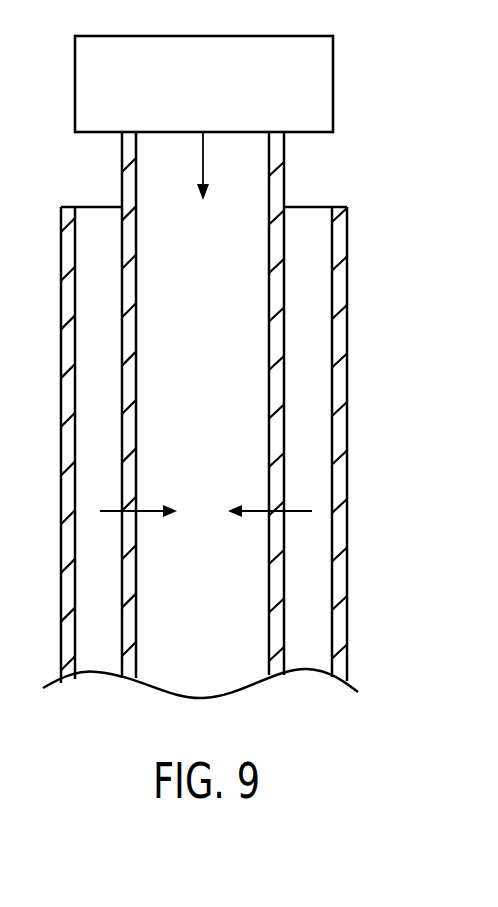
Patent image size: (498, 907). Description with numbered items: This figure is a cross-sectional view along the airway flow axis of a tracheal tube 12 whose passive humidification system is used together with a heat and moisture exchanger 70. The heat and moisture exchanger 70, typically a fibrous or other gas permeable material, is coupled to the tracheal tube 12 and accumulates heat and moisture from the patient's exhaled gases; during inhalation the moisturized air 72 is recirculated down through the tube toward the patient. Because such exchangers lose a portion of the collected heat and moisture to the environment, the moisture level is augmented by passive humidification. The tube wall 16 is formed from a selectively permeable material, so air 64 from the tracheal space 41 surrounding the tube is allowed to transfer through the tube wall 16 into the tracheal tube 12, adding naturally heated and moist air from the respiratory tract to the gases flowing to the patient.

The tracheal tube 12 is at (84, 181).
The tube wall 16 is at (127, 227).
The tracheal space 41 is at (112, 395).
The air 64 is at (292, 511).
The heat and moisture exchanger 70 is at (333, 92).
The moisturized air 72 is at (203, 158).